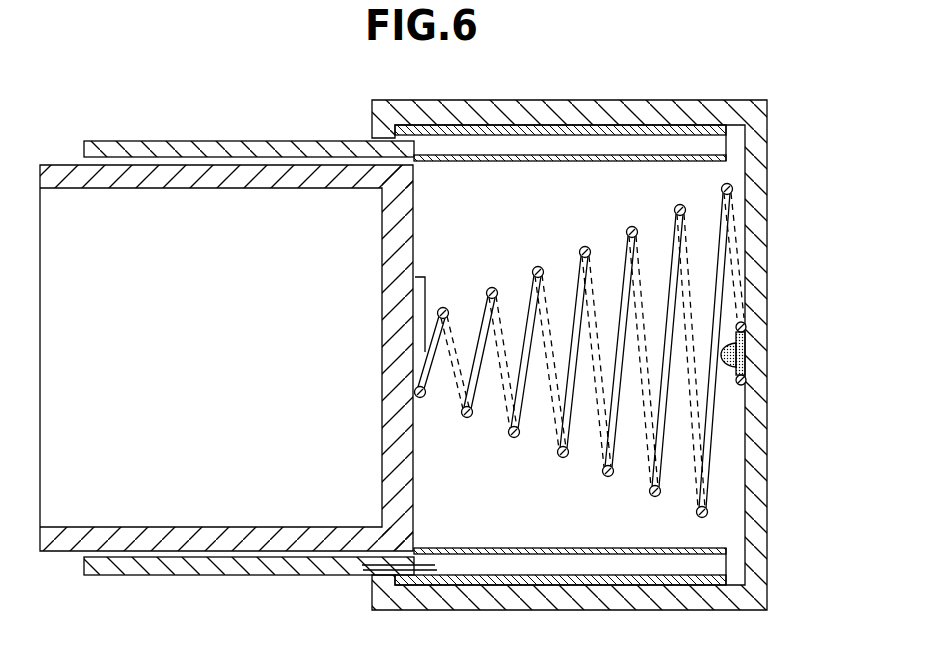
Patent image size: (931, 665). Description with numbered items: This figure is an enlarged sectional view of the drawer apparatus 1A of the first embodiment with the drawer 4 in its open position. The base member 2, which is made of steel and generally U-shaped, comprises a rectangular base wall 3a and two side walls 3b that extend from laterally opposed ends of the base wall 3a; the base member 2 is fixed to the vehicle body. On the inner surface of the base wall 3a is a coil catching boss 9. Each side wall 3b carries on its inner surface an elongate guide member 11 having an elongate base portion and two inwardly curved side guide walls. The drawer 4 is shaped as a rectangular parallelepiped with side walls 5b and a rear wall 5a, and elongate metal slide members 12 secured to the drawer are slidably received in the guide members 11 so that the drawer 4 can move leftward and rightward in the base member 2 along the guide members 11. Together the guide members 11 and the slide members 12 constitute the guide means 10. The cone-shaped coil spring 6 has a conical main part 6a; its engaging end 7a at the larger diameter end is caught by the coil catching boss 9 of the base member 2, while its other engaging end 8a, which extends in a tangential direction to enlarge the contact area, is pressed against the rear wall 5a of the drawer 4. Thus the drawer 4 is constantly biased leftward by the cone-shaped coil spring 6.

The drawer apparatus 1A is at (640, 80).
The base member 2 is at (718, 81).
The rectangular base wall 3a is at (758, 218).
The side wall 3b is at (567, 100).
The drawer 4 is at (263, 112).
The rear wall 5a is at (393, 273).
The side wall 5b is at (265, 178).
The cone-shaped coil spring 6 is at (594, 232).
The conical main part 6a is at (582, 297).
The engaging end 7a is at (747, 327).
The engaging end 8a is at (420, 295).
The coil catching boss 9 is at (747, 355).
The guide means 10 is at (350, 642).
The guide member 11 is at (363, 570).
The slide member 12 is at (318, 567).